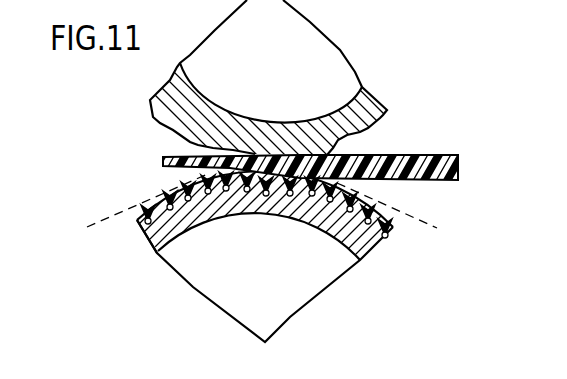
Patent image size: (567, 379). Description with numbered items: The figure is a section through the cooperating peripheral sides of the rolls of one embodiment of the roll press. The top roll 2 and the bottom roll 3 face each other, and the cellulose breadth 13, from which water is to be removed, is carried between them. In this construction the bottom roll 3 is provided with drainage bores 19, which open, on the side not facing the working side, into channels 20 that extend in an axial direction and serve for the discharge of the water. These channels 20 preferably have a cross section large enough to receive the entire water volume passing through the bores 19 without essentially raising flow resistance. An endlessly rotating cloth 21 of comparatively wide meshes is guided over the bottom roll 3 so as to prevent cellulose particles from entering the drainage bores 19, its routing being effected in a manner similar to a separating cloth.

The top roll 2 is at (367, 103).
The bottom roll 3 is at (370, 238).
The cellulose breadth 13 is at (432, 155).
The drainage bores 19 is at (172, 198).
The channels 20 is at (165, 228).
The cloth 21 is at (107, 218).